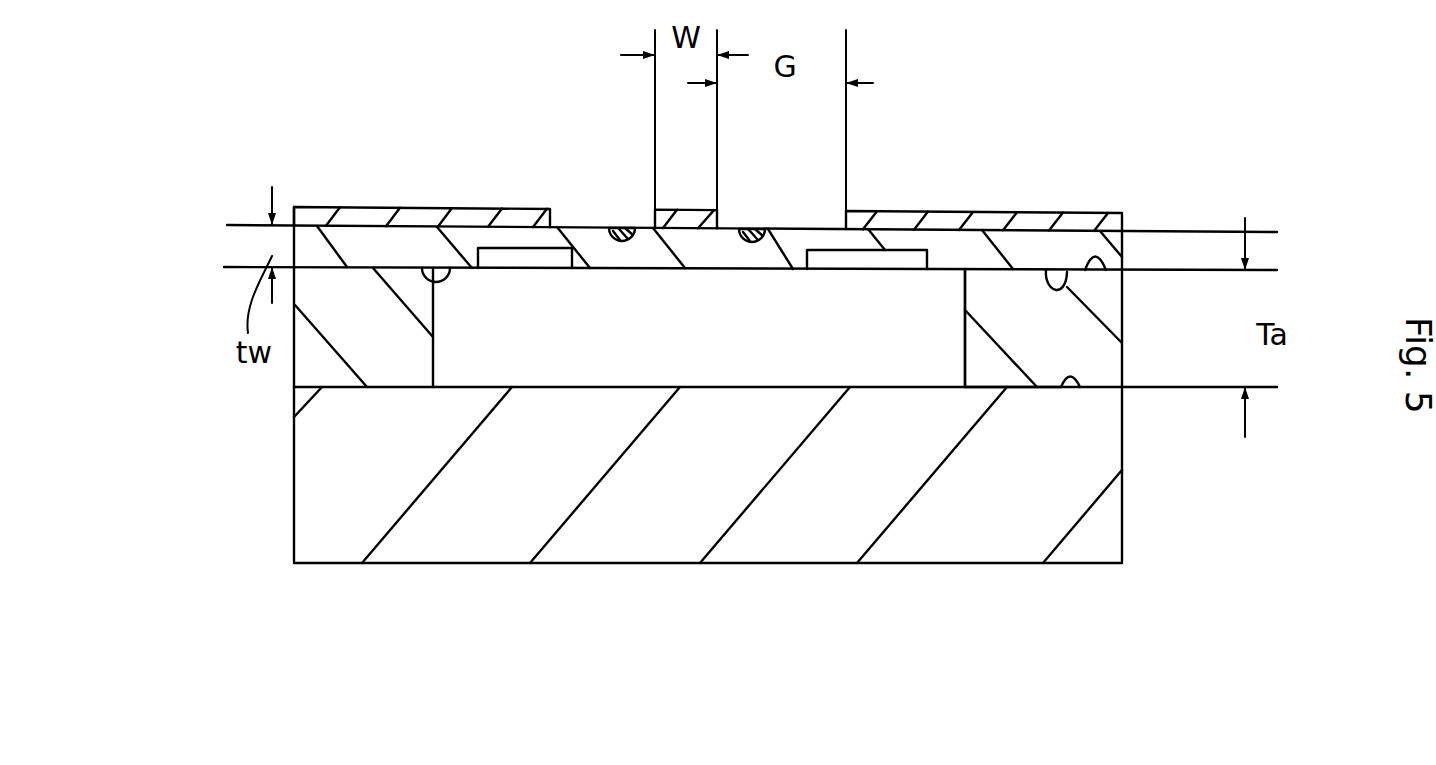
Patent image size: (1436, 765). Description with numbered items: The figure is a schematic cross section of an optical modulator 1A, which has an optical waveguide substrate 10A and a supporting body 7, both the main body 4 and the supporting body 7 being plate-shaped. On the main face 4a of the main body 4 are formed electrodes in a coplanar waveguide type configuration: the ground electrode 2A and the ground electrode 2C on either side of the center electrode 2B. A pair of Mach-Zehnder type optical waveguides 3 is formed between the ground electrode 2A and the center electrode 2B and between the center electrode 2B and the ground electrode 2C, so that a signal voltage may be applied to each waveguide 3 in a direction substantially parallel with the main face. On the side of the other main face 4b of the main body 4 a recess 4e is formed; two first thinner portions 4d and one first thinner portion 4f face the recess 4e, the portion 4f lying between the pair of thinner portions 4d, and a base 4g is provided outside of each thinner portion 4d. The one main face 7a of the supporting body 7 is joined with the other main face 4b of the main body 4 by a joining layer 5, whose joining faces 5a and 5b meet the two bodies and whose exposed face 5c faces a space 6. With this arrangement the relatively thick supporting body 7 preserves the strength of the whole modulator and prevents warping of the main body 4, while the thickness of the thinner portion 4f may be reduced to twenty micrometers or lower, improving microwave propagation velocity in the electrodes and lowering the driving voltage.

The optical modulator 1A is at (1124, 187).
The optical waveguide substrate 10A is at (1133, 228).
The ground electrode 2A is at (405, 216).
The center electrode 2B is at (690, 216).
The ground electrode 2C is at (893, 228).
The optical waveguide 3 is at (615, 227).
The main body 4 is at (1128, 263).
The main face 4a is at (953, 230).
The other main face 4b is at (451, 266).
The first thinner portion 4d is at (503, 240).
The recess 4e is at (541, 257).
The first thinner portion 4f is at (648, 250).
The base 4g is at (317, 240).
The joining layer 5 is at (1113, 357).
The joining face 5a is at (1013, 387).
The joining face 5b is at (1106, 270).
The exposed face 5c is at (965, 312).
The space 6 is at (727, 339).
The supporting body 7 is at (1128, 455).
The one main face 7a is at (1078, 388).